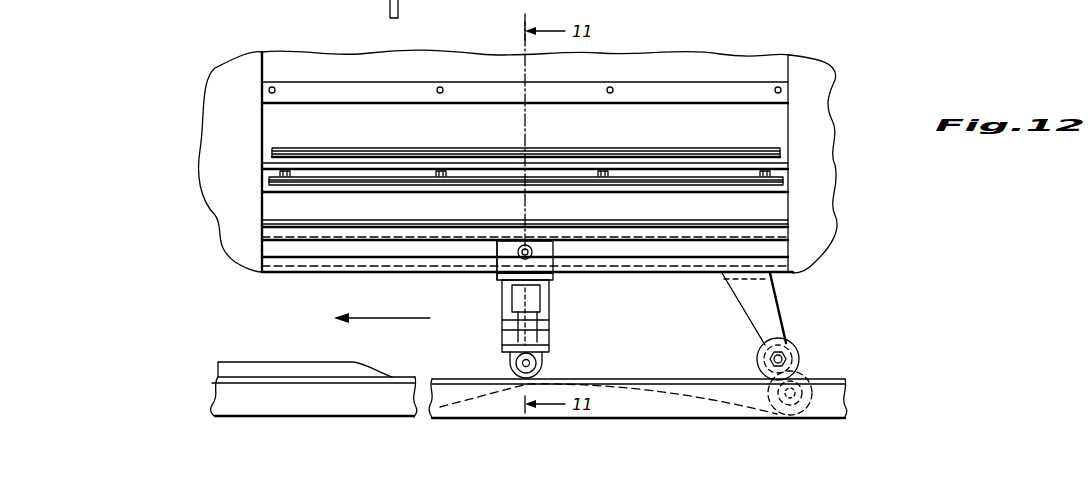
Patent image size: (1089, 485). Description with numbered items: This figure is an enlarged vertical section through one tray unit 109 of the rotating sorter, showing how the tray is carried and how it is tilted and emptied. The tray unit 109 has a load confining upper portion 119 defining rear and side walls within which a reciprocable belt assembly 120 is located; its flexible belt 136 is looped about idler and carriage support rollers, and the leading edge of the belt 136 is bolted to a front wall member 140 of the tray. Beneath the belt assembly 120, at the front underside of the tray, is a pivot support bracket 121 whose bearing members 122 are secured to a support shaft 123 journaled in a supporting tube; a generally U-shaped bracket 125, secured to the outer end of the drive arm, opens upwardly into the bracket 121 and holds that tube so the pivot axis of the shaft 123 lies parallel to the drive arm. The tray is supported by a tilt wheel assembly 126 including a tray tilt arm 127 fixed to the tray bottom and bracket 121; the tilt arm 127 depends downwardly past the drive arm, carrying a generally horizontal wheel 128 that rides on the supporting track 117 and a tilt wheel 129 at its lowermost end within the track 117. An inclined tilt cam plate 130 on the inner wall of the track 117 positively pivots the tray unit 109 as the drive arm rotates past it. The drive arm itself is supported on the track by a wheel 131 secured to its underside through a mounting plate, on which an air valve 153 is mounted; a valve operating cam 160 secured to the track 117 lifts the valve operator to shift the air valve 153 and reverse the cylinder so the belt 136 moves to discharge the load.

The tray unit 109 is at (245, 47).
The load confining upper portion 119 is at (258, 62).
The reciprocable belt assembly 120 is at (362, 144).
The flexible belt 136 is at (494, 124).
The front wall member 140 is at (285, 206).
The U-shaped bracket 125 is at (497, 248).
The support bracket 121 is at (532, 241).
The bearing members 122 is at (553, 258).
The support shaft 123 is at (500, 258).
The air valve 153 is at (516, 330).
The wheel 131 is at (540, 364).
The valve operating cam 160 is at (386, 370).
The supporting track 117 is at (700, 350).
The tilt cam plate 130 is at (627, 380).
The tray tilt arm 127 is at (745, 300).
The tilt wheel assembly 126 is at (790, 311).
The wheel 128 is at (794, 353).
The tilt wheel 129 is at (820, 385).